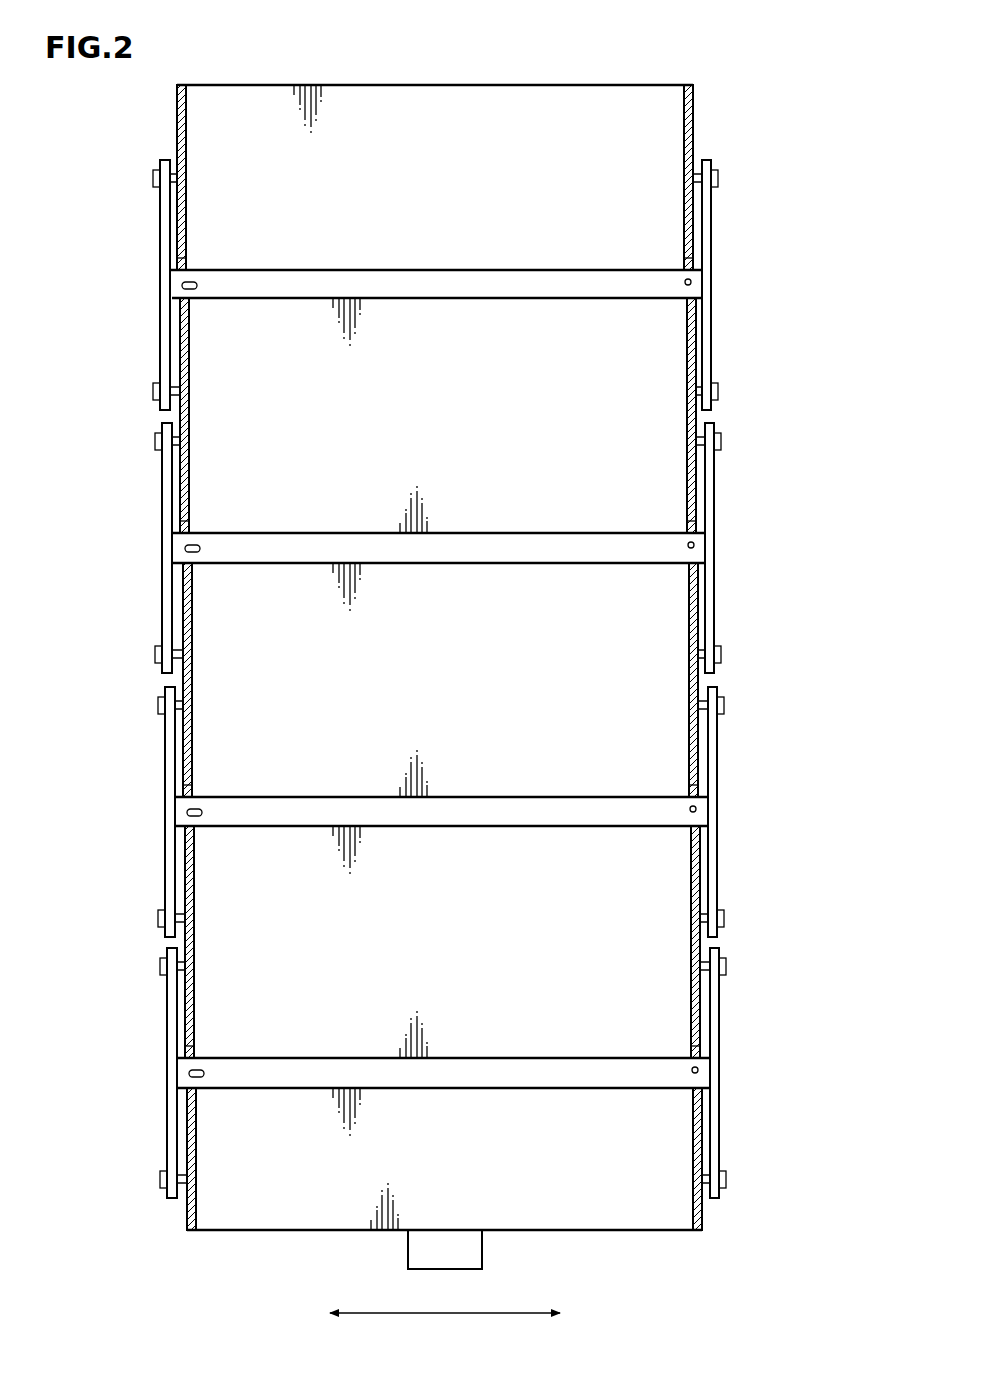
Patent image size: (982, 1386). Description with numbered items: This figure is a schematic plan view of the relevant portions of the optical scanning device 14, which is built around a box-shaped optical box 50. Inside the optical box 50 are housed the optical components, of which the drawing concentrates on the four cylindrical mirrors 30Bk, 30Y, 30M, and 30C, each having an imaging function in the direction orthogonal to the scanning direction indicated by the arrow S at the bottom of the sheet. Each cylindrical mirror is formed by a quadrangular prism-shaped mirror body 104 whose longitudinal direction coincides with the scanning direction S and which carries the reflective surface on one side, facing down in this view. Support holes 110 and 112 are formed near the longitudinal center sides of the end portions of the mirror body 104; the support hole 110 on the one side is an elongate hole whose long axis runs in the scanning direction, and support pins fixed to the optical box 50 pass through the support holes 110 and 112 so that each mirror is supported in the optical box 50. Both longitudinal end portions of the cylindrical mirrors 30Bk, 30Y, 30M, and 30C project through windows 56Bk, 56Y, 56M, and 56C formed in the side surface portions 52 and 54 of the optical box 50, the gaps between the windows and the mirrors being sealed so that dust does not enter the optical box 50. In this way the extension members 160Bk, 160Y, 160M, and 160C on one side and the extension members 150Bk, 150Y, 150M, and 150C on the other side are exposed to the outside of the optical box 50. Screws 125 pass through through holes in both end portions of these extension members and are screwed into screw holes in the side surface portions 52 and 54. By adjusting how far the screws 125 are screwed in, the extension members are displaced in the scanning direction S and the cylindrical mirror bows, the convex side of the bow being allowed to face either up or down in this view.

The optical scanning device 14 is at (434, 64).
The optical box 50 is at (537, 80).
The side surface portion 52 is at (177, 100).
The side surface portion 54 is at (695, 103).
The screw 125 is at (153, 178).
The cylindrical mirror 30Bk is at (472, 248).
The cylindrical mirror 30Y is at (472, 511).
The cylindrical mirror 30M is at (472, 775).
The cylindrical mirror 30C is at (472, 1036).
The window 56Bk is at (186, 267).
The window 56Y is at (189, 530).
The window 56M is at (192, 794).
The window 56C is at (194, 1055).
The extension member 160Bk is at (160, 281).
The extension member 160Y is at (162, 544).
The extension member 160M is at (165, 807).
The extension member 160C is at (167, 1070).
The extension member 150Bk is at (711, 280).
The extension member 150Y is at (714, 543).
The extension member 150M is at (717, 804).
The extension member 150C is at (719, 1066).
The mirror body 104 is at (430, 294).
The support hole 110 is at (198, 291).
The support hole 112 is at (686, 286).
The scanning direction S is at (443, 1316).